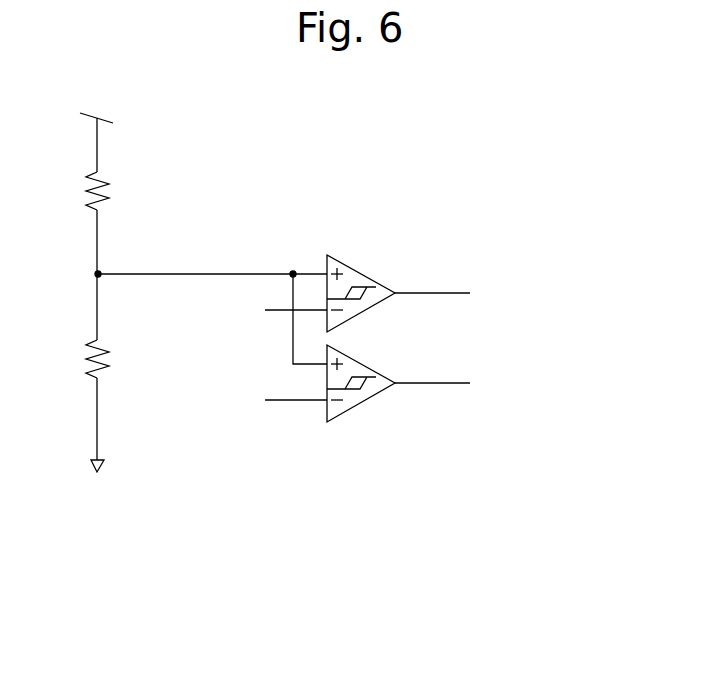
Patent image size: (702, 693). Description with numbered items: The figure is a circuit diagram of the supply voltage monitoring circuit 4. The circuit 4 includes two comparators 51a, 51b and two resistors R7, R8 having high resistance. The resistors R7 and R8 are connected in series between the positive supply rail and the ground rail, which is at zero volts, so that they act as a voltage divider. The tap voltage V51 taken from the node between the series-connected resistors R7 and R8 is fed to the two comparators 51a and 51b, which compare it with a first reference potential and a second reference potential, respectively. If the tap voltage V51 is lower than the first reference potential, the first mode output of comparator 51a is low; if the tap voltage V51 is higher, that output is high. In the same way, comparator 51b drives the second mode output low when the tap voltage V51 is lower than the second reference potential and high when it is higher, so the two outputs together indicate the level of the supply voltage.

The supply voltage monitoring circuit 4 is at (467, 132).
The resistor R7 is at (110, 190).
The resistor R8 is at (110, 358).
The tap voltage V51 is at (100, 272).
The comparator 51a is at (366, 270).
The comparator 51b is at (366, 360).